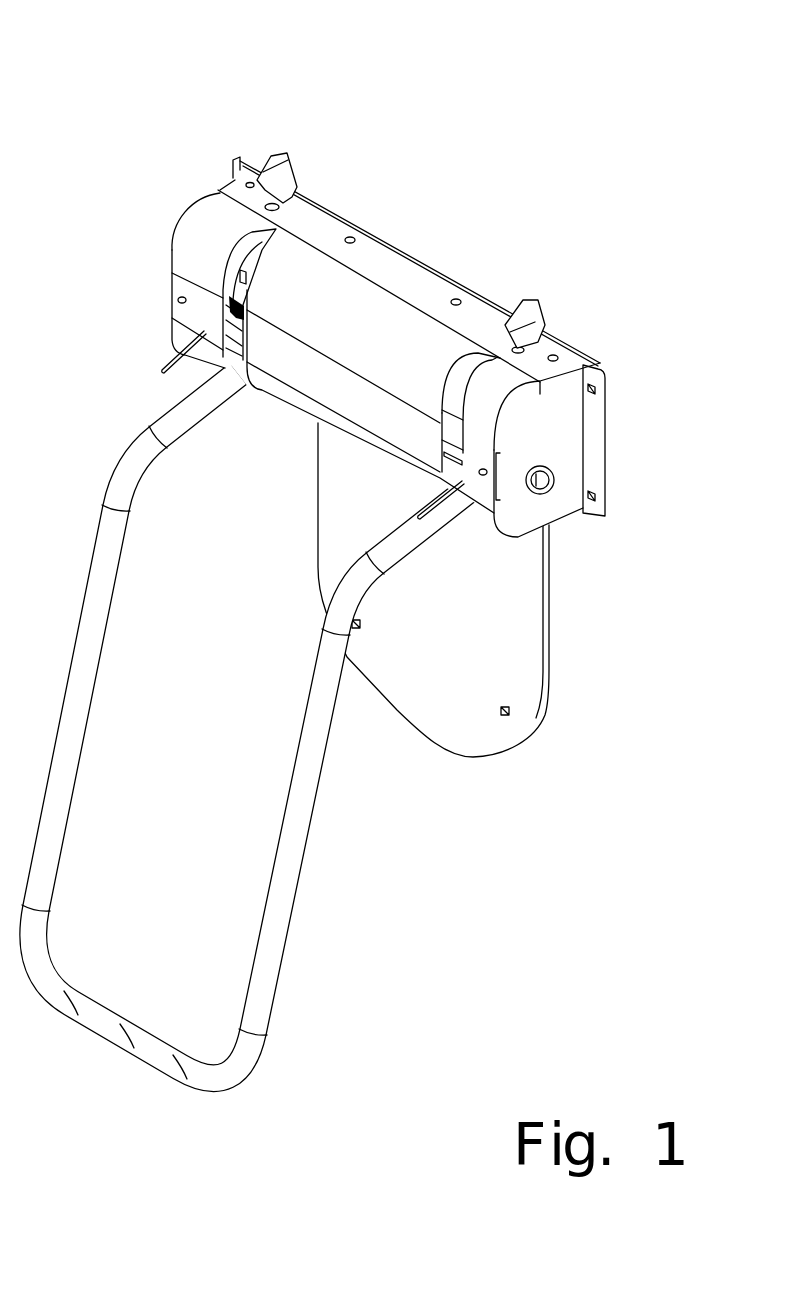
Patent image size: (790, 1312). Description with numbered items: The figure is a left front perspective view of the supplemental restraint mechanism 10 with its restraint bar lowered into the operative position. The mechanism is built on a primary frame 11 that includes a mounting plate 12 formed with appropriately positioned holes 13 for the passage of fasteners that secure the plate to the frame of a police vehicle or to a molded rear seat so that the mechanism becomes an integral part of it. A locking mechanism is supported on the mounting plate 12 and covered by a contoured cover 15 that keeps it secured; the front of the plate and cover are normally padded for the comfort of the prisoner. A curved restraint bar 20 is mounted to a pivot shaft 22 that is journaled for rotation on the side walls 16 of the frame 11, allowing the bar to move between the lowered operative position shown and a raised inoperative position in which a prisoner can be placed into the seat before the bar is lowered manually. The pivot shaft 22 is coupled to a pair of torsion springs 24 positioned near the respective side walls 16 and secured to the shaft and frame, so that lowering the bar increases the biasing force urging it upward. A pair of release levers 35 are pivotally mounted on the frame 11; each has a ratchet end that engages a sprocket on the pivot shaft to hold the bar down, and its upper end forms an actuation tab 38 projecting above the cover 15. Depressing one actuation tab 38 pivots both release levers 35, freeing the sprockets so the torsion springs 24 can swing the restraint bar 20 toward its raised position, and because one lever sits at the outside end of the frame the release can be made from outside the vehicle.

The supplemental restraint mechanism 10 is at (195, 97).
The primary frame 11 is at (585, 370).
The mounting plate 12 is at (482, 653).
The holes 13 is at (505, 710).
The cover 15 is at (372, 297).
The side walls 16 is at (547, 408).
The restraint bar 20 is at (296, 882).
The pivot shaft 22 is at (547, 490).
The torsion springs 24 is at (176, 354).
The release levers 35 is at (534, 275).
The actuation tab 38 is at (291, 174).